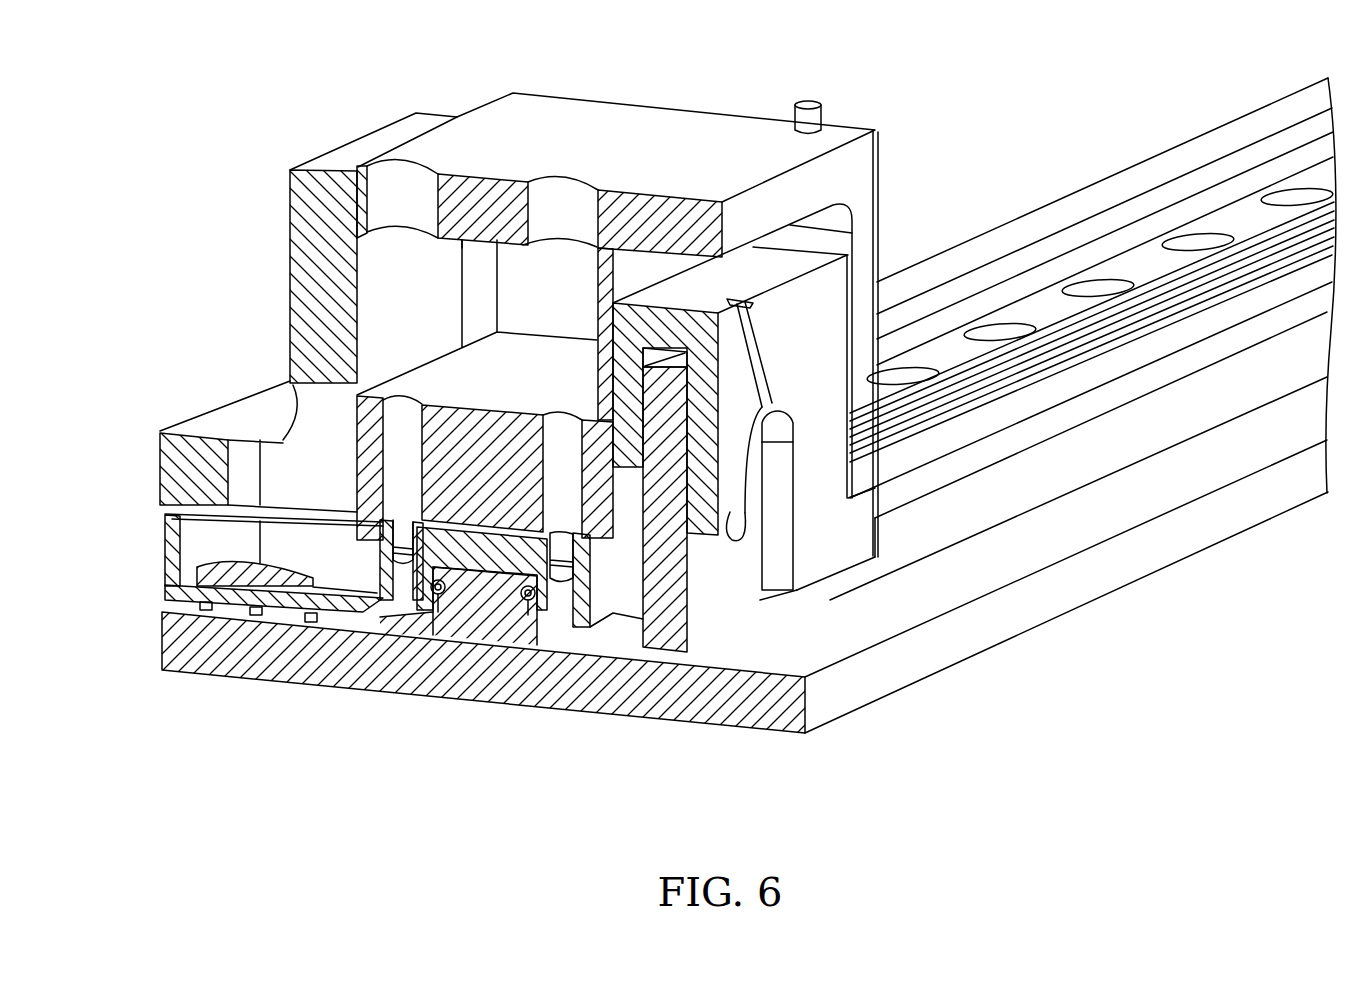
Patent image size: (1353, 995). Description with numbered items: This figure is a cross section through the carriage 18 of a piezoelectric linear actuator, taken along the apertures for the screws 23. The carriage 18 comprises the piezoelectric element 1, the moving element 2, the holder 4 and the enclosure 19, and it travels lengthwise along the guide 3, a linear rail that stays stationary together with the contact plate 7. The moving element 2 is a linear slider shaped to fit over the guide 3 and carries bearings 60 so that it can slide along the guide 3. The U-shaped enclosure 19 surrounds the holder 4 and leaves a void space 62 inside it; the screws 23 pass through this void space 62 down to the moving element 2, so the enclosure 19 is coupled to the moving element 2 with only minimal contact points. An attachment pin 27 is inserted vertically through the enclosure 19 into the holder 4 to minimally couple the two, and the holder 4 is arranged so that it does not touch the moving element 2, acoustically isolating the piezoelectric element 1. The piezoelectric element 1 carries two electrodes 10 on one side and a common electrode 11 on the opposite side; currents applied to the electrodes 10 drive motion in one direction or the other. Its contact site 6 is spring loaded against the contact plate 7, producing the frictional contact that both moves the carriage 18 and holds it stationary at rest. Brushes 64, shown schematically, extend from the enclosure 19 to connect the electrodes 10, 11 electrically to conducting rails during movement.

The carriage 18 is at (320, 144).
The enclosure 19 is at (573, 127).
The attachment pin 27 is at (810, 113).
The holder 4 is at (805, 330).
The guide 3 is at (1137, 265).
The void space 62 is at (522, 292).
The brush 64 is at (187, 603).
The moving element 2 is at (383, 583).
The screw 23 is at (407, 537).
The bearing 60 is at (437, 592).
The common electrode 11 is at (643, 590).
The piezoelectric element 1 is at (677, 557).
The contact site 6 is at (730, 558).
The electrode 10 is at (735, 563).
The contact plate 7 is at (968, 493).